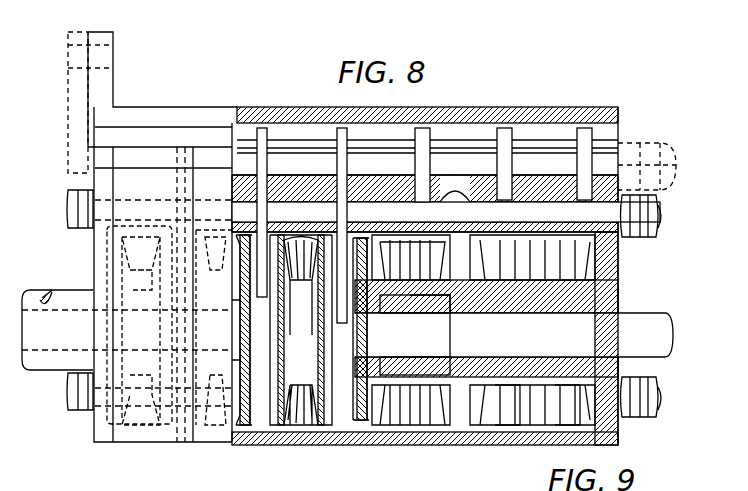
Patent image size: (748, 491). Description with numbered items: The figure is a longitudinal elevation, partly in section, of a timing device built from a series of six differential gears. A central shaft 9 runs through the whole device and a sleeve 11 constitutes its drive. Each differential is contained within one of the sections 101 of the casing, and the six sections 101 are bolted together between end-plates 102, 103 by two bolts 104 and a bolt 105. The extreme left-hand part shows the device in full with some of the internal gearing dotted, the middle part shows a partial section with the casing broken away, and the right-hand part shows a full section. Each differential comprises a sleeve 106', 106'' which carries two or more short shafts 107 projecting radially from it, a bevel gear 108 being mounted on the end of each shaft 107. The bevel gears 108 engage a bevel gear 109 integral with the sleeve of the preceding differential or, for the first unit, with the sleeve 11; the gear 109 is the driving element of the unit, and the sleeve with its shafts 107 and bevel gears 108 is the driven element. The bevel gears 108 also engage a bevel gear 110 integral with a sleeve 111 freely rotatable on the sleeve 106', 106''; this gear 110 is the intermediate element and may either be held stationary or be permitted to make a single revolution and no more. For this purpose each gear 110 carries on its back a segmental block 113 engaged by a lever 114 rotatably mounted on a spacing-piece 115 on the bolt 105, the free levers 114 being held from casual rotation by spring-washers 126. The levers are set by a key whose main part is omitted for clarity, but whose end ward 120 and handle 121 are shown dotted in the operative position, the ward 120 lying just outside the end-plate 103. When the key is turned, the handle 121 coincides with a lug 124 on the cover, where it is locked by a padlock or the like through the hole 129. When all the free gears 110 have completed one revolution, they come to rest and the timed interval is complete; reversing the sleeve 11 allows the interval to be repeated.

The central shaft 9 is at (30, 352).
The sleeve 11 is at (52, 292).
The casing sections 101 is at (160, 444).
The end-plate 102 is at (102, 444).
The end-plate 103 is at (612, 446).
The bolts 104 is at (648, 414).
The bolt 105 is at (650, 232).
The sleeve 106' is at (376, 357).
The sleeve 106'' is at (452, 335).
The short shafts 107 is at (302, 370).
The bevel gear 108 is at (352, 446).
The bevel gear 109 is at (432, 440).
The bevel gear 110 is at (522, 440).
The sleeve 111 is at (576, 430).
The segmental block 113 is at (500, 318).
The lever 114 is at (262, 128).
The spacing-piece 115 is at (464, 187).
The end ward 120 is at (645, 141).
The handle 121 is at (76, 79).
The lug 124 is at (107, 80).
The spring-washers 126 is at (405, 178).
The hole 129 is at (70, 47).